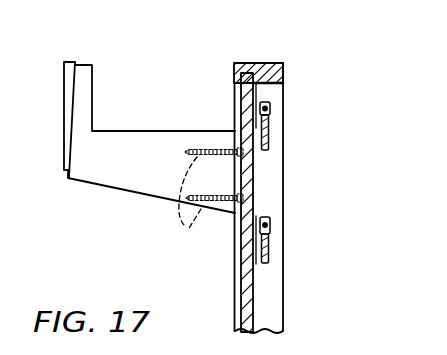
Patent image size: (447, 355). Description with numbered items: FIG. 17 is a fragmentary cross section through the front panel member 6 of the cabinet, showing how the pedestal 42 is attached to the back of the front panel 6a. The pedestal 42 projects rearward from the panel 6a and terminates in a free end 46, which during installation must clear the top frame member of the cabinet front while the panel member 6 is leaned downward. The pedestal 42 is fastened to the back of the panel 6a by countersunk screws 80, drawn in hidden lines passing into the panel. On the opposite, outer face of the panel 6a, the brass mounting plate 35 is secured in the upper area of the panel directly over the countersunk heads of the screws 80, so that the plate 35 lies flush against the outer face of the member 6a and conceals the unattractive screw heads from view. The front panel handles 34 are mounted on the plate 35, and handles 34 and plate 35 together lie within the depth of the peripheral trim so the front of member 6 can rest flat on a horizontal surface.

The front panel member 6 is at (283, 74).
The front panel 6a is at (234, 102).
The front panel handles 34 is at (270, 112).
The mounting plate 35 is at (255, 182).
The pedestal 42 is at (134, 180).
The free end of the pedestal 46 is at (86, 92).
The countersunk screws 80 is at (183, 223).